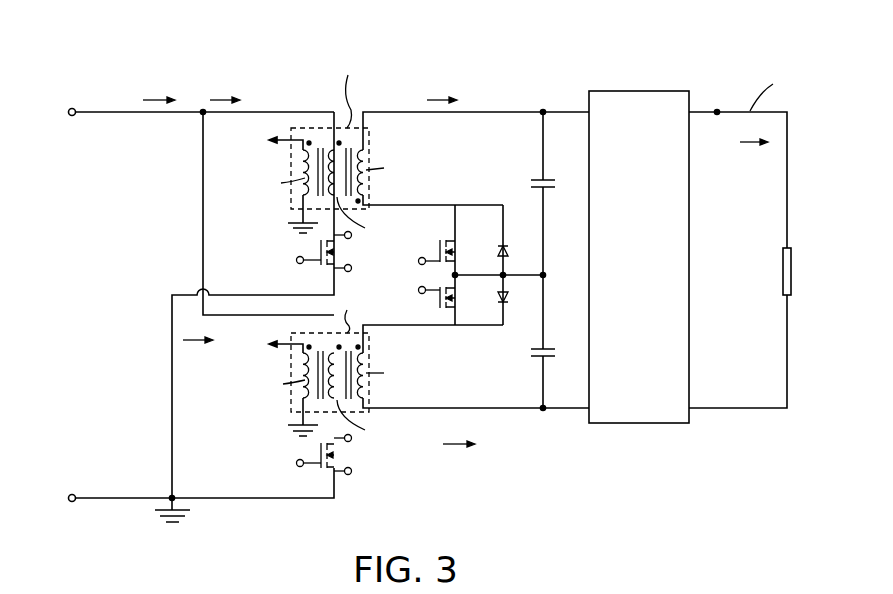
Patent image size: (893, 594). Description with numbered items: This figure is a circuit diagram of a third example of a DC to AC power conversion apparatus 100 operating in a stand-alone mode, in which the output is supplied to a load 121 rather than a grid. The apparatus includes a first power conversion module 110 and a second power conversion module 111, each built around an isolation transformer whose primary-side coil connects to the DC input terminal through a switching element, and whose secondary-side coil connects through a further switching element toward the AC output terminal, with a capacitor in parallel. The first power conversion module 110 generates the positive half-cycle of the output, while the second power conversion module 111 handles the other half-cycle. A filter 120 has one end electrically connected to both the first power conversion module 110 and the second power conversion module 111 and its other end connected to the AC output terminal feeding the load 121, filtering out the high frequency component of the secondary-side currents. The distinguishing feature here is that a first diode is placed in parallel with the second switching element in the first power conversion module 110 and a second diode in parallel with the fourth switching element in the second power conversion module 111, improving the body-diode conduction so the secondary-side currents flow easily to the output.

The DC to AC power conversion apparatus 100 is at (280, 52).
The first power conversion module 110 is at (360, 111).
The second power conversion module 111 is at (400, 433).
The filter 120 is at (641, 91).
The load 121 is at (783, 272).